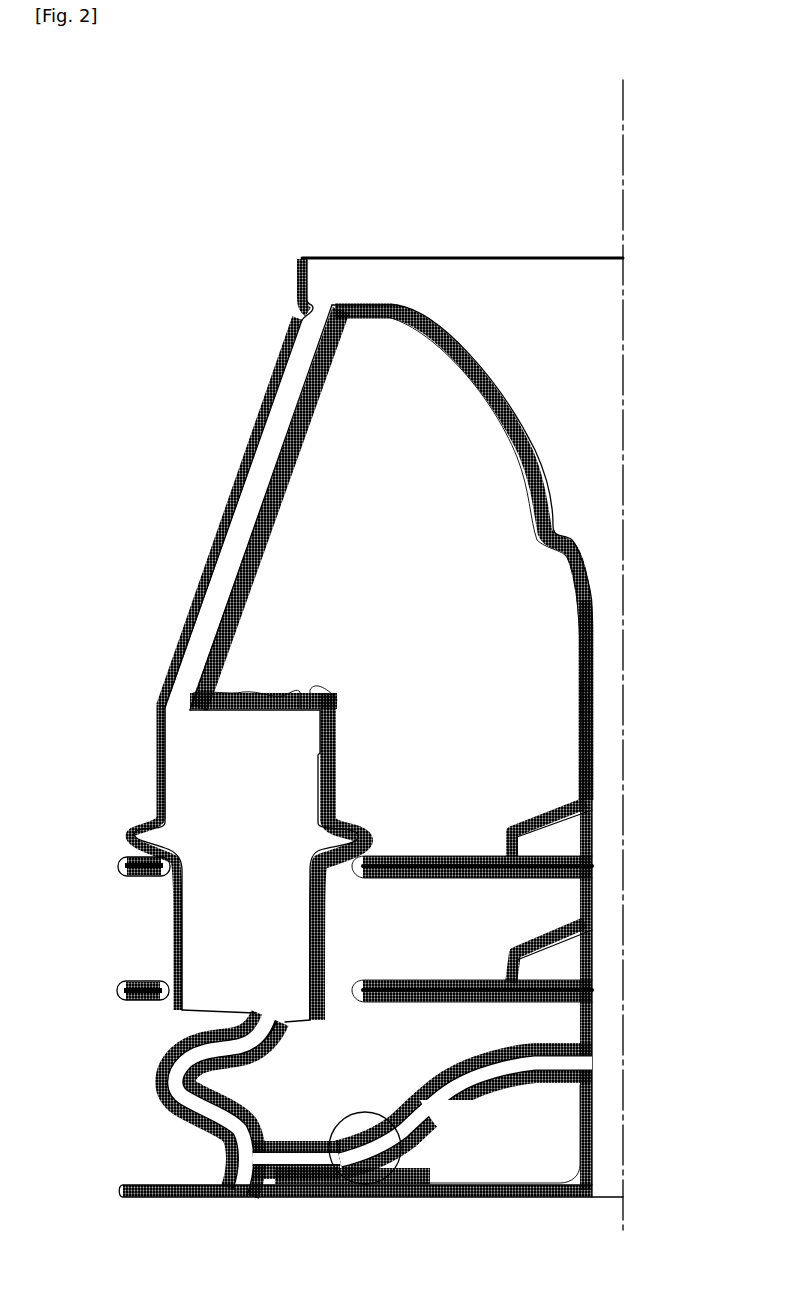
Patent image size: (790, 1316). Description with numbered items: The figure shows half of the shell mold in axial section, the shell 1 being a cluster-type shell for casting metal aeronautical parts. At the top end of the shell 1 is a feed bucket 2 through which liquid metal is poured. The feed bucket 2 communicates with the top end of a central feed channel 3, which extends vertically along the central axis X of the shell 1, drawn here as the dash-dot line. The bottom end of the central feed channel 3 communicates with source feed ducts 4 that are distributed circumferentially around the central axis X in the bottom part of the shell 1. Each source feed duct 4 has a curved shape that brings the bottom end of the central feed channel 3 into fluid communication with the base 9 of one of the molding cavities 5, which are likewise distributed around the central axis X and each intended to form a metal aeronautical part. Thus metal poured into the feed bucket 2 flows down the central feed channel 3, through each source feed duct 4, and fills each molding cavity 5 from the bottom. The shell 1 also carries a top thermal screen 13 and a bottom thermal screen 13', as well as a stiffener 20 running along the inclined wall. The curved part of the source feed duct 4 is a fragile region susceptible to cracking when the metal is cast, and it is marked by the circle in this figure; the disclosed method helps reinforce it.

The shell 1 is at (203, 497).
The feed bucket 2 is at (527, 290).
The central feed channel 3 is at (608, 648).
The source feed duct 4 is at (452, 1103).
The molding cavity 5 is at (230, 938).
The base of molding cavity 9 is at (153, 1085).
The top thermal screen 13 is at (341, 860).
The bottom thermal screen 13' is at (332, 981).
The stiffener 20 is at (268, 410).
The central axis X is at (623, 160).